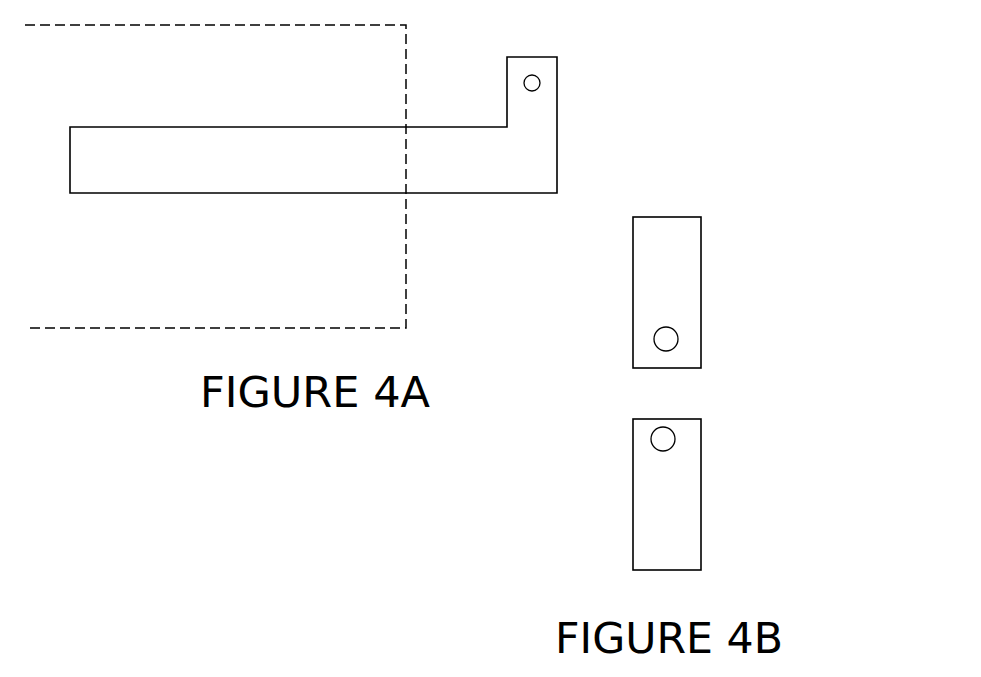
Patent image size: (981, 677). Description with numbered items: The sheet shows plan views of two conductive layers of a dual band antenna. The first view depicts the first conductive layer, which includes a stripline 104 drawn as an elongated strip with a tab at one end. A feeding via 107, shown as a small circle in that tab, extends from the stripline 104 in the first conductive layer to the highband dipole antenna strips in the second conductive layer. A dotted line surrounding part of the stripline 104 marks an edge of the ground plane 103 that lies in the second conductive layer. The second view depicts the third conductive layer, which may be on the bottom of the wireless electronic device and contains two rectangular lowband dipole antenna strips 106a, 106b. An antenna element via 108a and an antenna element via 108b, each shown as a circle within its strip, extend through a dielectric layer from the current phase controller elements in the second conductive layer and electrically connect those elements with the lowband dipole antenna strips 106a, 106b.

In FIG. 4A, the ground plane 103 is at (340, 236).
In FIG. 4A, the stripline 104 is at (342, 159).
In FIG. 4A, the feeding via 107 is at (532, 83).
In FIG. 4B, the lowband dipole antenna strip 106a is at (666, 259).
In FIG. 4B, the antenna element via 108a is at (666, 339).
In FIG. 4B, the lowband dipole antenna strip 106b is at (675, 536).
In FIG. 4B, the antenna element via 108b is at (663, 439).